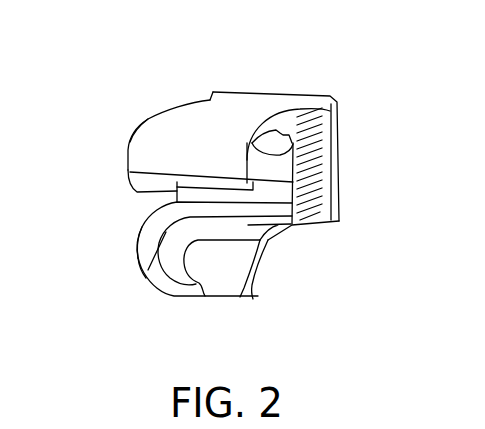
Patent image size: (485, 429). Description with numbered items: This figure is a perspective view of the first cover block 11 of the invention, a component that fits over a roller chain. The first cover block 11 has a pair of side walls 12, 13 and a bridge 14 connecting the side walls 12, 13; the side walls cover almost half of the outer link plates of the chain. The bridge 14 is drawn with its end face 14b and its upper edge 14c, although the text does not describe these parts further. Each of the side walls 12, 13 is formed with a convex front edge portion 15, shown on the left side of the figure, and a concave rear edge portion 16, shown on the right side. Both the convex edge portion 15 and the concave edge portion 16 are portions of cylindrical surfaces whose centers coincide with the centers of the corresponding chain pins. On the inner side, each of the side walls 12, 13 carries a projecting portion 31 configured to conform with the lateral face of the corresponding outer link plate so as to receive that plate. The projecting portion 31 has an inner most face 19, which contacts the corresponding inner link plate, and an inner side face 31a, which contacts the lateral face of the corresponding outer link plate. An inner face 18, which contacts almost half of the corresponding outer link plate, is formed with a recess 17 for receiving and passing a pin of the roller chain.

The first cover block 11 is at (261, 62).
The side wall 12 is at (187, 127).
The side wall 13 is at (195, 289).
The bridge 14 is at (296, 160).
The end face of holder 14b is at (317, 173).
The top edge of holder 14c is at (212, 92).
The convex front edge portion 15 is at (130, 131).
The concave rear edge portion 16 is at (300, 144).
The recess 17 is at (263, 300).
The inner face 18 is at (218, 227).
The inner most face 19 is at (147, 262).
The projecting portion 31 is at (137, 192).
The inner side face 31a is at (150, 270).